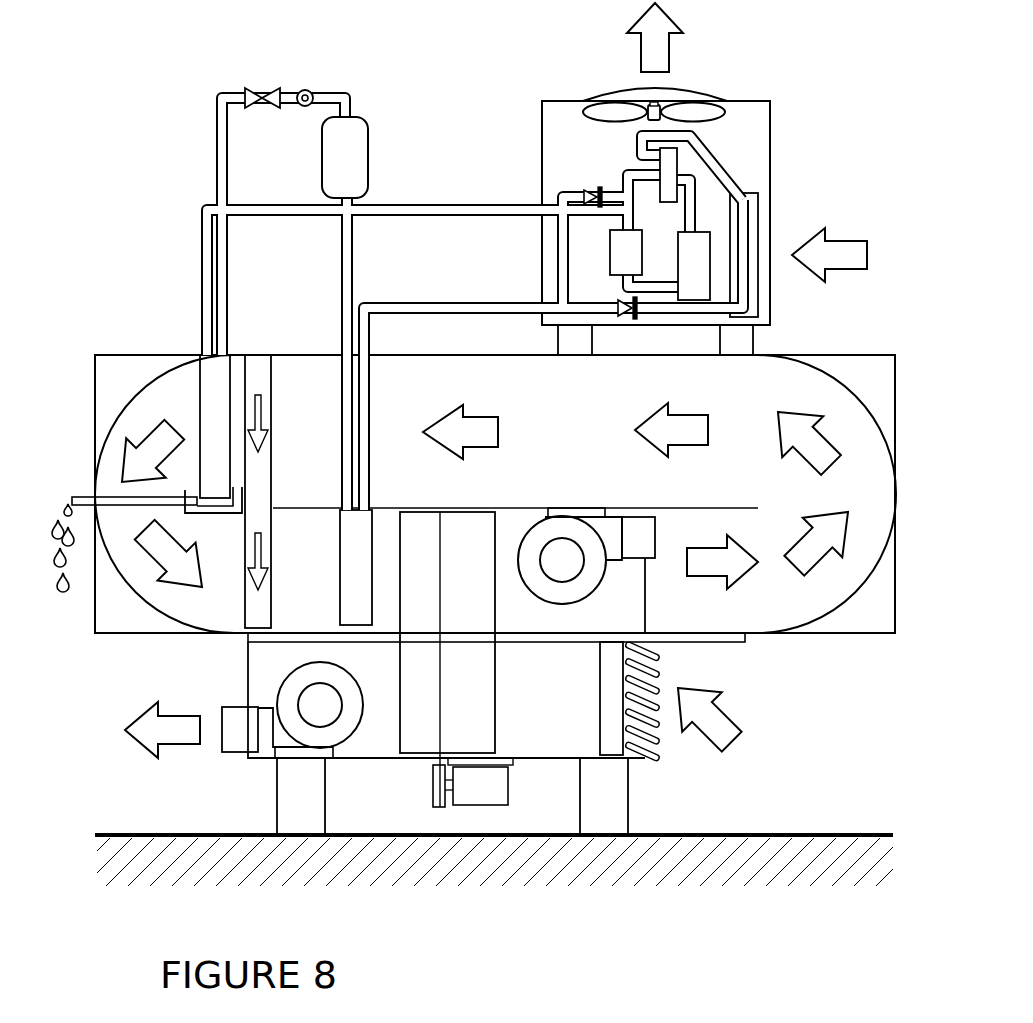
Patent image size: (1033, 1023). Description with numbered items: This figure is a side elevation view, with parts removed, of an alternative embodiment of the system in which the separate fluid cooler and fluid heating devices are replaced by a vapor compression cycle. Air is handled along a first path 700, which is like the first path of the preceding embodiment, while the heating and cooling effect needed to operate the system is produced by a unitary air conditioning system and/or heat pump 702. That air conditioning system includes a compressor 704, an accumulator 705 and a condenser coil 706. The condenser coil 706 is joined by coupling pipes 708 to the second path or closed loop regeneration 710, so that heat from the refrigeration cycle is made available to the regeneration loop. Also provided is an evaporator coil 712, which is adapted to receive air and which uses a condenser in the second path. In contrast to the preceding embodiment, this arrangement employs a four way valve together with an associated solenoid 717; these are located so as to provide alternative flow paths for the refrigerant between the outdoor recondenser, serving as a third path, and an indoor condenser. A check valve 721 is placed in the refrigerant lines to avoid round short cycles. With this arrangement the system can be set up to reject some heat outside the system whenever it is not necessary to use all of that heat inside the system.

The first path 700 is at (772, 387).
The unitary air conditioning system and/or heat pump 702 is at (742, 99).
The compressor 704 is at (690, 270).
The accumulator 705 is at (622, 245).
The condenser coil 706 is at (770, 227).
The coupling pipes 708 is at (712, 157).
The second path or closed loop regeneration 710 is at (387, 207).
The evaporator coil 712 is at (197, 372).
The solenoid 717 is at (677, 150).
The check valve 721 is at (590, 185).